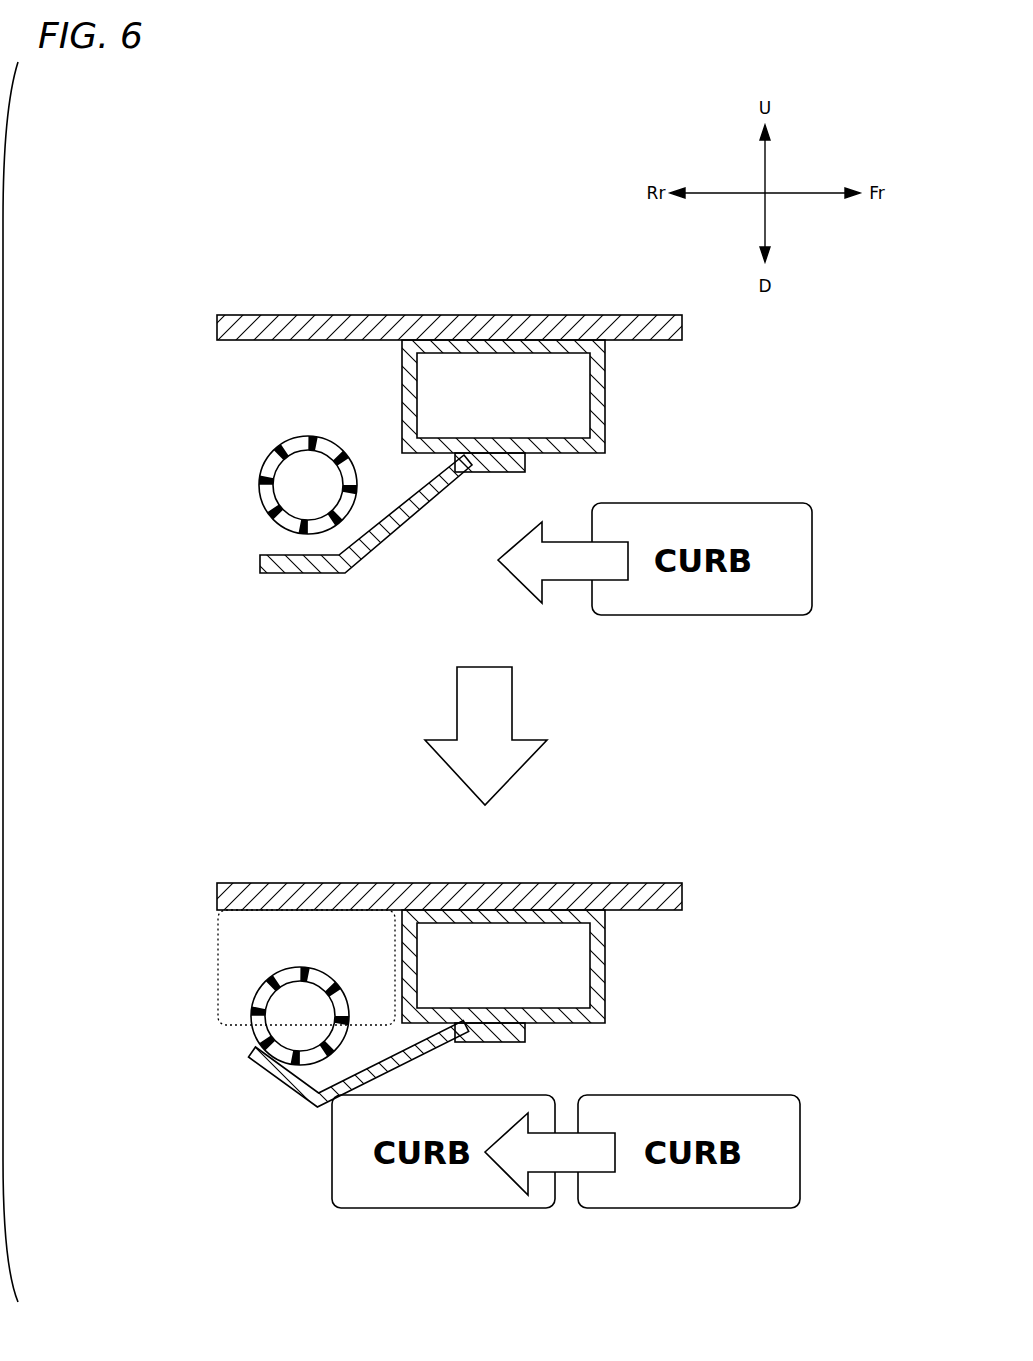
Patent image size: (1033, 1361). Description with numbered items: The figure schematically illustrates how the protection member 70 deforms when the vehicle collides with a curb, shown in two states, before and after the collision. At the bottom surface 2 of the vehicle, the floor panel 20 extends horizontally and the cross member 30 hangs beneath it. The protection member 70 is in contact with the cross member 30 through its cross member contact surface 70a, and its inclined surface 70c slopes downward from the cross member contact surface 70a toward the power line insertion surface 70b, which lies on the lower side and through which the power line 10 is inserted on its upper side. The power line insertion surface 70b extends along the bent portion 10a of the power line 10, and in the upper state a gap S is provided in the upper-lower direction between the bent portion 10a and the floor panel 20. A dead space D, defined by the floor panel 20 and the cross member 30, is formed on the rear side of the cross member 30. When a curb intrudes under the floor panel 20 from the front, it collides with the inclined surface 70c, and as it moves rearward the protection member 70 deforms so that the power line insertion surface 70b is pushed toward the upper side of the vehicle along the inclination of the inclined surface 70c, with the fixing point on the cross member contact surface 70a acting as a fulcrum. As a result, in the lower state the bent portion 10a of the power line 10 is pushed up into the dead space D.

The bottom surface 2 is at (332, 310).
The floor panel 20 is at (605, 315).
The cross member 30 is at (610, 392).
The power line 10 is at (232, 750).
The bent portion 10a is at (262, 492).
The protection member 70 is at (383, 830).
The cross member contact surface 70a is at (500, 473).
The power line insertion surface 70b is at (272, 576).
The inclined surface 70c is at (400, 527).
The gap S is at (308, 341).
The dead space D is at (228, 1022).